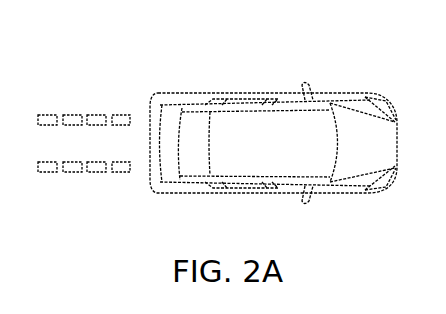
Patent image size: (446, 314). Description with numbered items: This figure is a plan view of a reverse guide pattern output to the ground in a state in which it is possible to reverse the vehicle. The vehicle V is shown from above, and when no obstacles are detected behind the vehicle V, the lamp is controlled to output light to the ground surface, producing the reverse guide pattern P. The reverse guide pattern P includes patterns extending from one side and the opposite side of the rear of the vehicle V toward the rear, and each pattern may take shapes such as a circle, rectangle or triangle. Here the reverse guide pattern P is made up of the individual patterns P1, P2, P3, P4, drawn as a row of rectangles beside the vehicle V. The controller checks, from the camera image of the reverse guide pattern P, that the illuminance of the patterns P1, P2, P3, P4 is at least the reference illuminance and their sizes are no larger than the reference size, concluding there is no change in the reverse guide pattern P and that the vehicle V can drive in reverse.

The reverse guide pattern P is at (140, 44).
The pattern P1 is at (122, 113).
The pattern P2 is at (100, 113).
The pattern P3 is at (75, 113).
The pattern P4 is at (52, 113).
The vehicle V is at (205, 107).